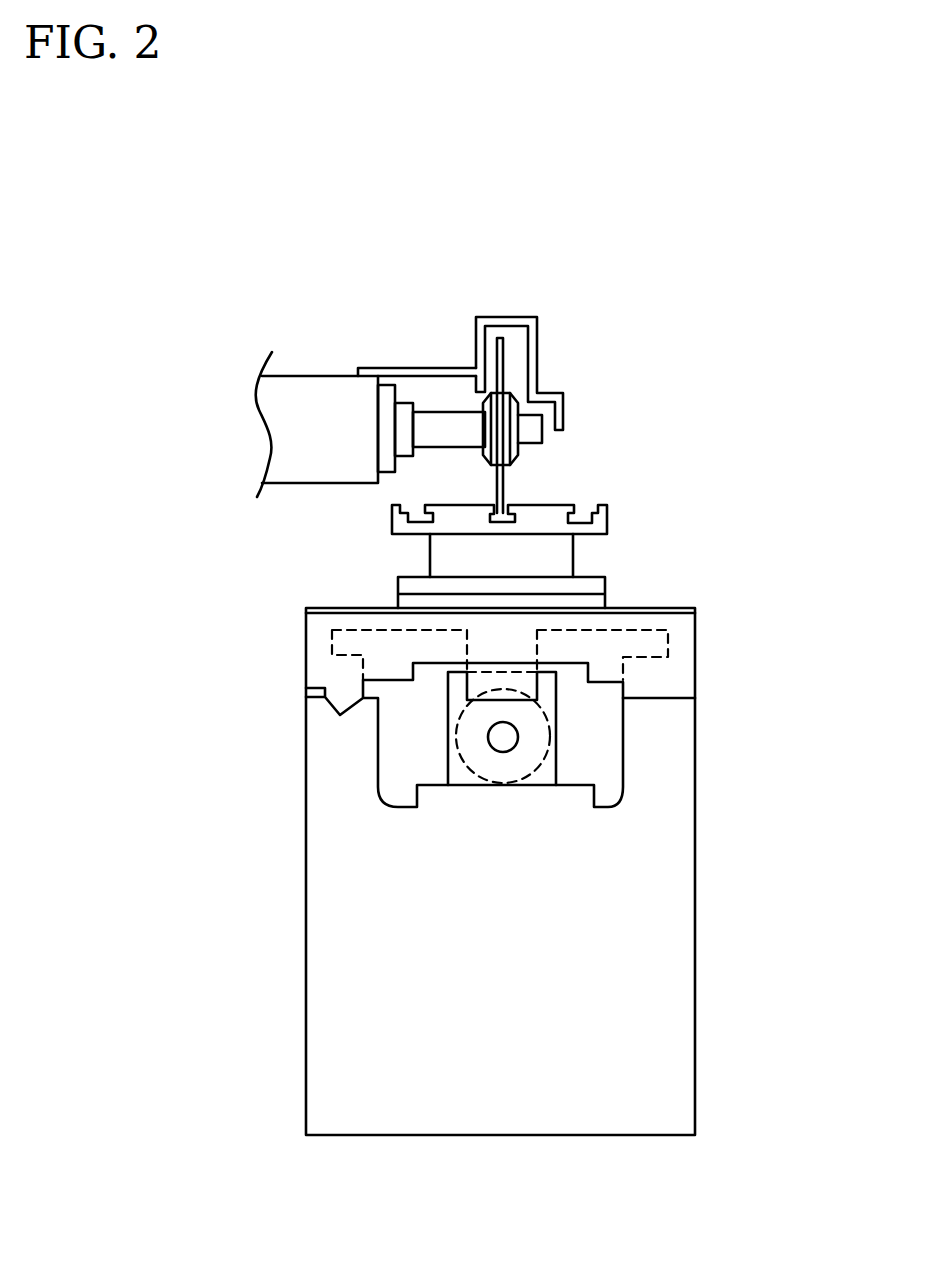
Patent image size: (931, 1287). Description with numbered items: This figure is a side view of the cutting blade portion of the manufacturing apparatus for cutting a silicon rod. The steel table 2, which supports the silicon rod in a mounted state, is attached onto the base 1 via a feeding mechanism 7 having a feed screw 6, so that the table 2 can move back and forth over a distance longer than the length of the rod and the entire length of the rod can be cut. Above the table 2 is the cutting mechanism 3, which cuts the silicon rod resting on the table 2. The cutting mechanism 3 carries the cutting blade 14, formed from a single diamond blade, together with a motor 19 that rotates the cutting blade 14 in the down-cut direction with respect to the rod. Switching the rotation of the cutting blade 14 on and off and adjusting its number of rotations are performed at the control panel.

The base 1 is at (687, 927).
The table 2 is at (607, 533).
The cutting mechanism 3 is at (573, 368).
The feed screw 6 is at (550, 758).
The feeding mechanism 7 is at (433, 748).
The cutting blade 14 is at (507, 483).
The motor 19 is at (297, 393).